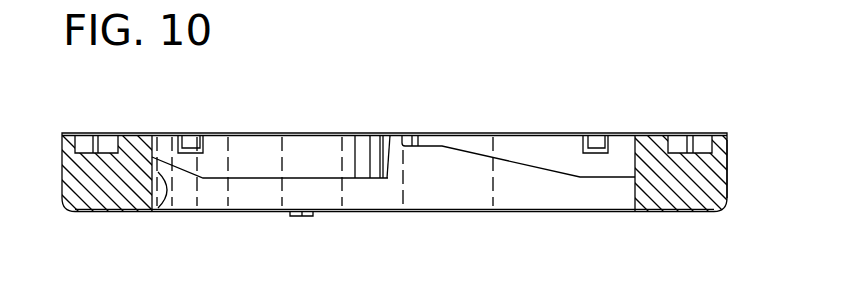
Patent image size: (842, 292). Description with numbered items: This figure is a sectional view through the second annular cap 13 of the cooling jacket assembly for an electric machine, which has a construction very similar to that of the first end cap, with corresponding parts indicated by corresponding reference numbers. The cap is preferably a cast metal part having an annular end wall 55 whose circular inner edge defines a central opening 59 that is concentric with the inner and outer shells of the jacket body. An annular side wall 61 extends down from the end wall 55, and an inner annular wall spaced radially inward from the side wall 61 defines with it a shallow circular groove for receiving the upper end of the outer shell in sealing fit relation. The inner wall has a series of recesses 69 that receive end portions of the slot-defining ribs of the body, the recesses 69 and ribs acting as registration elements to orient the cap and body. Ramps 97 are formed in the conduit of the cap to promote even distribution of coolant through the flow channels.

The second annular cap 13 is at (619, 134).
The annular end wall 55 is at (657, 212).
The central opening 59 is at (164, 206).
The annular side wall 61 is at (727, 172).
The recesses 69 is at (81, 137).
The ramps 97 is at (518, 163).